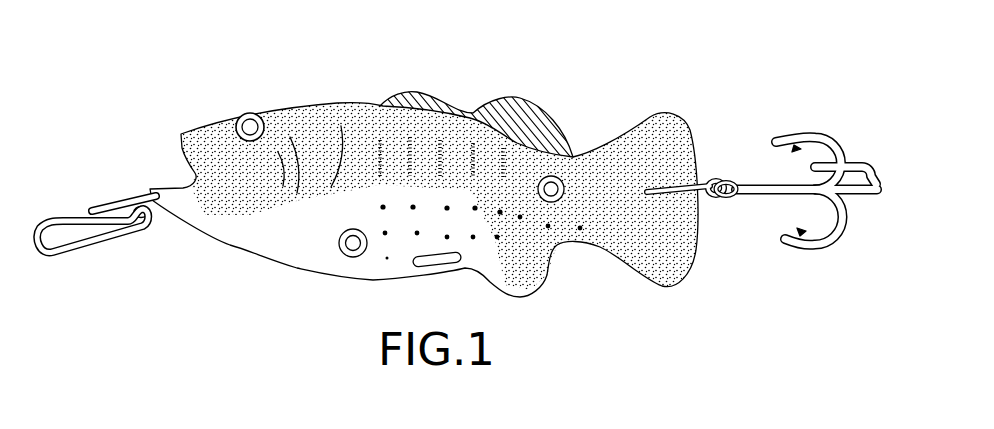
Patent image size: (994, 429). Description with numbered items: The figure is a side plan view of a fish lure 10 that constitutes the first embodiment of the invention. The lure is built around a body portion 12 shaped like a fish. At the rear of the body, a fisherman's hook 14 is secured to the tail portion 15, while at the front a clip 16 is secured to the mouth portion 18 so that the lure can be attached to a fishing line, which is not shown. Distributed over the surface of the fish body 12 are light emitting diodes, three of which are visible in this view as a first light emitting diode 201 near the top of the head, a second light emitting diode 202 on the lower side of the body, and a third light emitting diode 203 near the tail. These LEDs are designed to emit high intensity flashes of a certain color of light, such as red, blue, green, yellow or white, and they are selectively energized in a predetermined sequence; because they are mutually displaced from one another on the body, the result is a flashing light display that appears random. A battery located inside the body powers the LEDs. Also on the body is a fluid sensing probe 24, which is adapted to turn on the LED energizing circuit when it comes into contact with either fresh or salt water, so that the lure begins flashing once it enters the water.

The fish lure 10 is at (499, 58).
The body portion 12 is at (335, 103).
The fisherman's hook 14 is at (847, 230).
The tail portion 15 is at (706, 215).
The clip 16 is at (87, 252).
The mouth portion 18 is at (152, 186).
The light emitting diode 201 is at (250, 118).
The light emitting diode 202 is at (344, 256).
The light emitting diode 203 is at (562, 184).
The fluid sensing probe 24 is at (440, 268).